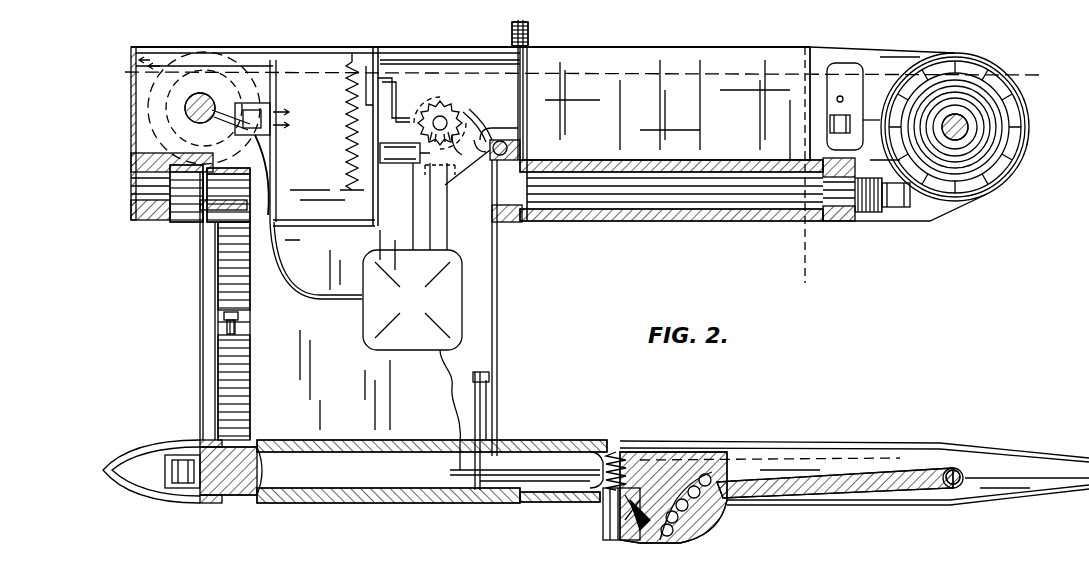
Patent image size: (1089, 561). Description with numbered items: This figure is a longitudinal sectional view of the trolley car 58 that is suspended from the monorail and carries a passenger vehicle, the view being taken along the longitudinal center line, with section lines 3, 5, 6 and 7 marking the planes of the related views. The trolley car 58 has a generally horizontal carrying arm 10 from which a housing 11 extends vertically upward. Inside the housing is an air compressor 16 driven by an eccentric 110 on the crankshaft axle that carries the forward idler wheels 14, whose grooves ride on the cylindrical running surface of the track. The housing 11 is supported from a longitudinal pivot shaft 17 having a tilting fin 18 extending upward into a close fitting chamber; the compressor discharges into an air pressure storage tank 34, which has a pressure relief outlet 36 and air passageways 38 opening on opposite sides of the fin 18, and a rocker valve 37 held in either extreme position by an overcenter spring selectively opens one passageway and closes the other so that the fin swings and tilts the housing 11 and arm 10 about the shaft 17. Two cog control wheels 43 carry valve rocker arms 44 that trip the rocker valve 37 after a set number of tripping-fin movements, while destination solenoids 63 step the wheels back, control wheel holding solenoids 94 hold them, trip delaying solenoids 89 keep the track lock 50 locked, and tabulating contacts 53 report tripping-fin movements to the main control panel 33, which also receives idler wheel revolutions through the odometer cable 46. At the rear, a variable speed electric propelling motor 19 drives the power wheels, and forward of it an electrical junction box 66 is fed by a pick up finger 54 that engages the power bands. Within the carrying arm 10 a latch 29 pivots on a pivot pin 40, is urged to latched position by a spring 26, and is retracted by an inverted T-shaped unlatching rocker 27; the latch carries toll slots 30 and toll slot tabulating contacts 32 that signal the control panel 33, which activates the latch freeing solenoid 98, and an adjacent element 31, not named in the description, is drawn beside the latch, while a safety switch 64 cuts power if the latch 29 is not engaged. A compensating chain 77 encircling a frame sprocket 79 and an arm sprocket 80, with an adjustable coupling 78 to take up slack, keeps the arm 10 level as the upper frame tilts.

The section line 3- 3 is at (125, 68).
The section line 5- 5 is at (807, 222).
The section line 6- 6 is at (781, 339).
The section line 7- 7 is at (781, 355).
The carrying arm 10 is at (773, 443).
The housing 11 is at (498, 268).
The forward idler wheels 14 is at (146, 560).
The air compressor 16 is at (214, 96).
The longitudinal pivot shaft 17 is at (562, 183).
The tilting fin 18 is at (706, 118).
The variable speed electric propelling motor 19 is at (1026, 110).
The spring 26 is at (615, 444).
The unlatching rocker 27 is at (477, 478).
The latch 29 is at (712, 508).
The toll slots 30 is at (677, 538).
The retainer 31 is at (618, 527).
The toll slot tabulating contacts 32 is at (660, 538).
The main control panel 33 is at (412, 360).
The air pressure storage tank 34 is at (328, 178).
The pressure relief outlet 36 is at (228, 59).
The rocker valve 37 is at (360, 98).
The air passageways 38 is at (472, 60).
The pivot pin 40 is at (960, 473).
The cog control wheels 43 is at (460, 113).
The valve rocker arm 44 is at (412, 124).
The odometer cable 46 is at (288, 279).
The track lock 50 is at (530, 30).
The tabulating contacts 53 is at (487, 147).
The pick up finger 54 is at (840, 131).
The trolley car 58 is at (131, 158).
The destination solenoids 63 is at (412, 167).
The safety switch 64 is at (600, 440).
The electrical junction box 66 is at (853, 106).
The compensating chain 77 is at (250, 280).
The adjustable coupling 78 is at (240, 328).
The frame sprocket 79 is at (245, 176).
The arm sprocket 80 is at (248, 442).
The trip delaying solenoids 89 is at (487, 135).
The control wheel holding solenoids 94 is at (418, 101).
The latch freeing solenoid 98 is at (627, 467).
The eccentric 110 is at (185, 107).